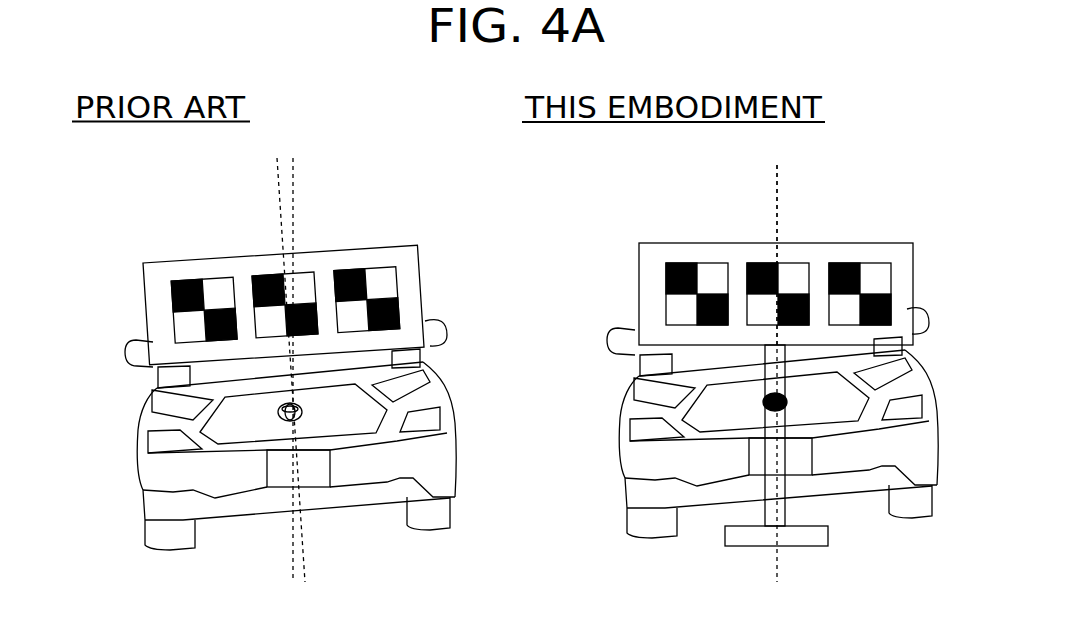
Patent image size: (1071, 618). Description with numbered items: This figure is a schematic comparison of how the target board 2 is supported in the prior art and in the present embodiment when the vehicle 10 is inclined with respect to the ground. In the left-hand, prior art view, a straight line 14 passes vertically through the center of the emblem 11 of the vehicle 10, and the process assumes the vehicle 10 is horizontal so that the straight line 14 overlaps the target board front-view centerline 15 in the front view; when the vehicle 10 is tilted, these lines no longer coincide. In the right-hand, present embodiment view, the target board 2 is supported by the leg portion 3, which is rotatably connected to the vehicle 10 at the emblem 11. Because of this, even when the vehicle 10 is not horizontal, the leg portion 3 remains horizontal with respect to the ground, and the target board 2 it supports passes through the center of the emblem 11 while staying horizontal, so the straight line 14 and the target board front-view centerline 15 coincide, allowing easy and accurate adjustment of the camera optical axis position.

The target board 2 is at (152, 296).
The leg portion 3 is at (733, 532).
The vehicle 10 is at (132, 440).
The emblem 11 is at (302, 412).
The straight line 14 is at (293, 222).
The target board front-view centerline 15 is at (281, 243).